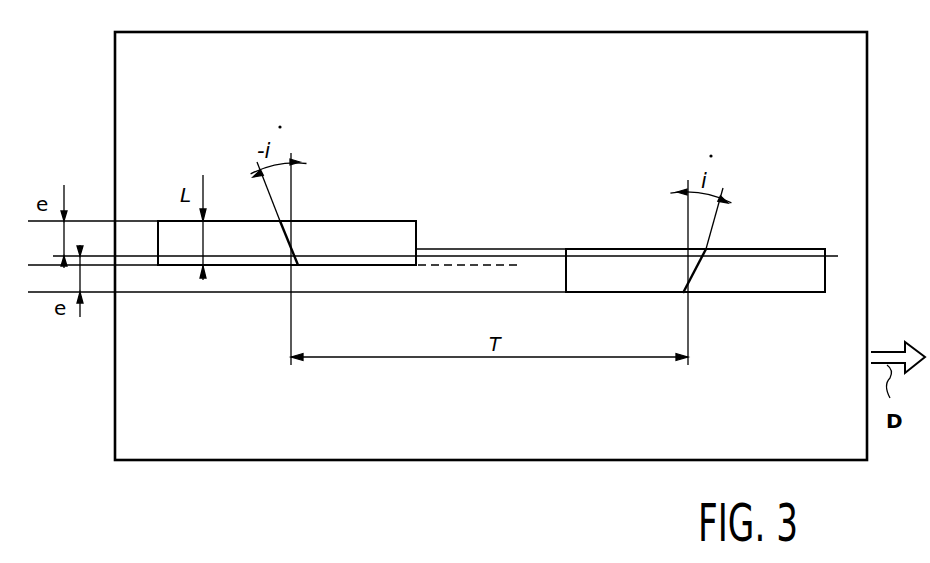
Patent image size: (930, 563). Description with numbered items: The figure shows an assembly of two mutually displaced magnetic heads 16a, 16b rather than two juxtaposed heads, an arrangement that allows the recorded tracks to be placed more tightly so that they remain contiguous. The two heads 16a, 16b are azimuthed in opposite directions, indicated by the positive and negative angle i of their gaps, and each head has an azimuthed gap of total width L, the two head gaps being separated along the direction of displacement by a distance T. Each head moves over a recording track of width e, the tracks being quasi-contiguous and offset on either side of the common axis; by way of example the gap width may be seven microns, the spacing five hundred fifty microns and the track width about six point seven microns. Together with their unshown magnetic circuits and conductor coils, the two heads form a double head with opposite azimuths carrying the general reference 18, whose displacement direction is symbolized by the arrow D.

The magnetic head 16a is at (363, 227).
The magnetic head 16b is at (585, 253).
The double head with opposite azimuths 18 is at (210, 455).